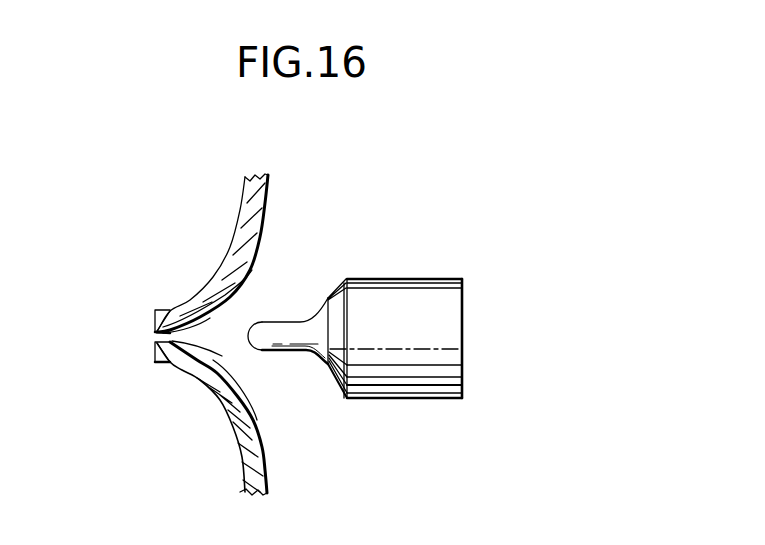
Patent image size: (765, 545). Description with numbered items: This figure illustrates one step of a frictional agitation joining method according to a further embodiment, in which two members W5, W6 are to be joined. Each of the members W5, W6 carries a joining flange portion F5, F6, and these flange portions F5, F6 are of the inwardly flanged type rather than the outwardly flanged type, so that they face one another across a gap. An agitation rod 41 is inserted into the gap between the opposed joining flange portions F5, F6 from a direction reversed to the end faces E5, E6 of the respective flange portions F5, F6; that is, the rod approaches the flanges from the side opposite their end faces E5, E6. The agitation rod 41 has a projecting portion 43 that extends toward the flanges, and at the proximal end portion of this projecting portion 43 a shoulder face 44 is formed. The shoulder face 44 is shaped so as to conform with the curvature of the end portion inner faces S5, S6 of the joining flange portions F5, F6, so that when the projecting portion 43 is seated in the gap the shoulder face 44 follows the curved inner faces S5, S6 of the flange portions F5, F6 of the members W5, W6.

The agitation rod 41 is at (439, 278).
The projecting portion 43 is at (255, 330).
The shoulder face 44 is at (319, 356).
The member to be joined W5 is at (268, 179).
The member to be joined W6 is at (268, 480).
The end face E5 is at (155, 322).
The end face E6 is at (155, 344).
The joining flange portion F5 is at (170, 310).
The joining flange portion F6 is at (170, 363).
The end portion inner face S5 is at (163, 333).
The end portion inner face S6 is at (172, 341).